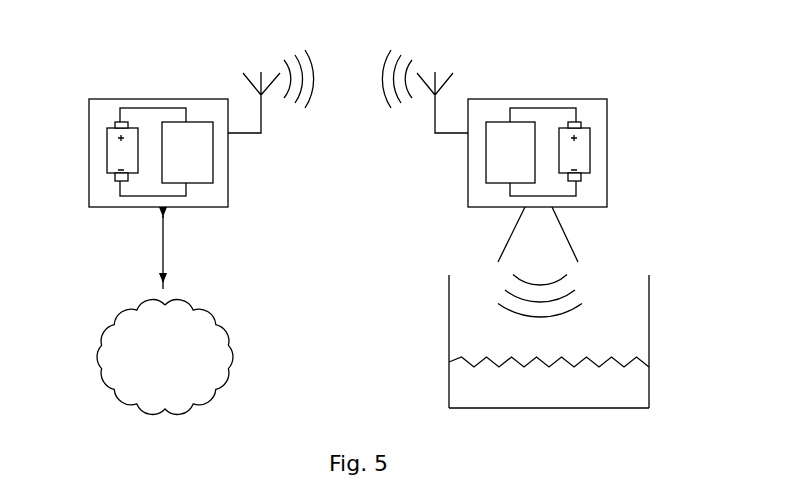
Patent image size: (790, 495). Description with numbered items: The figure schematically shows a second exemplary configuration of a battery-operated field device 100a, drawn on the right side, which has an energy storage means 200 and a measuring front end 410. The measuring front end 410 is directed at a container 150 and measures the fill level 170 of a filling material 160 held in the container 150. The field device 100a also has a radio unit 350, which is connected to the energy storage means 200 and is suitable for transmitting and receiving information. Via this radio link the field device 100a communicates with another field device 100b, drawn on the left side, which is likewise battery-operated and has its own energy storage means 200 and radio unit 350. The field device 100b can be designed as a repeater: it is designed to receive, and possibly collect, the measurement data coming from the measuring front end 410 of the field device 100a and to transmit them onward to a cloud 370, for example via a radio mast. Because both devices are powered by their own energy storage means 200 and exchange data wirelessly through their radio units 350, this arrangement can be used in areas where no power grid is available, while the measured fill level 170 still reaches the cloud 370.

The battery-operated field device 100a is at (590, 85).
The field device 100b is at (130, 75).
The energy storage means 200 is at (107, 163).
The radio unit 350 is at (253, 156).
The cloud 370 is at (178, 367).
The measuring front end 410 is at (501, 222).
The container 150 is at (465, 324).
The filling material 160 is at (465, 387).
The fill level 170 is at (595, 357).